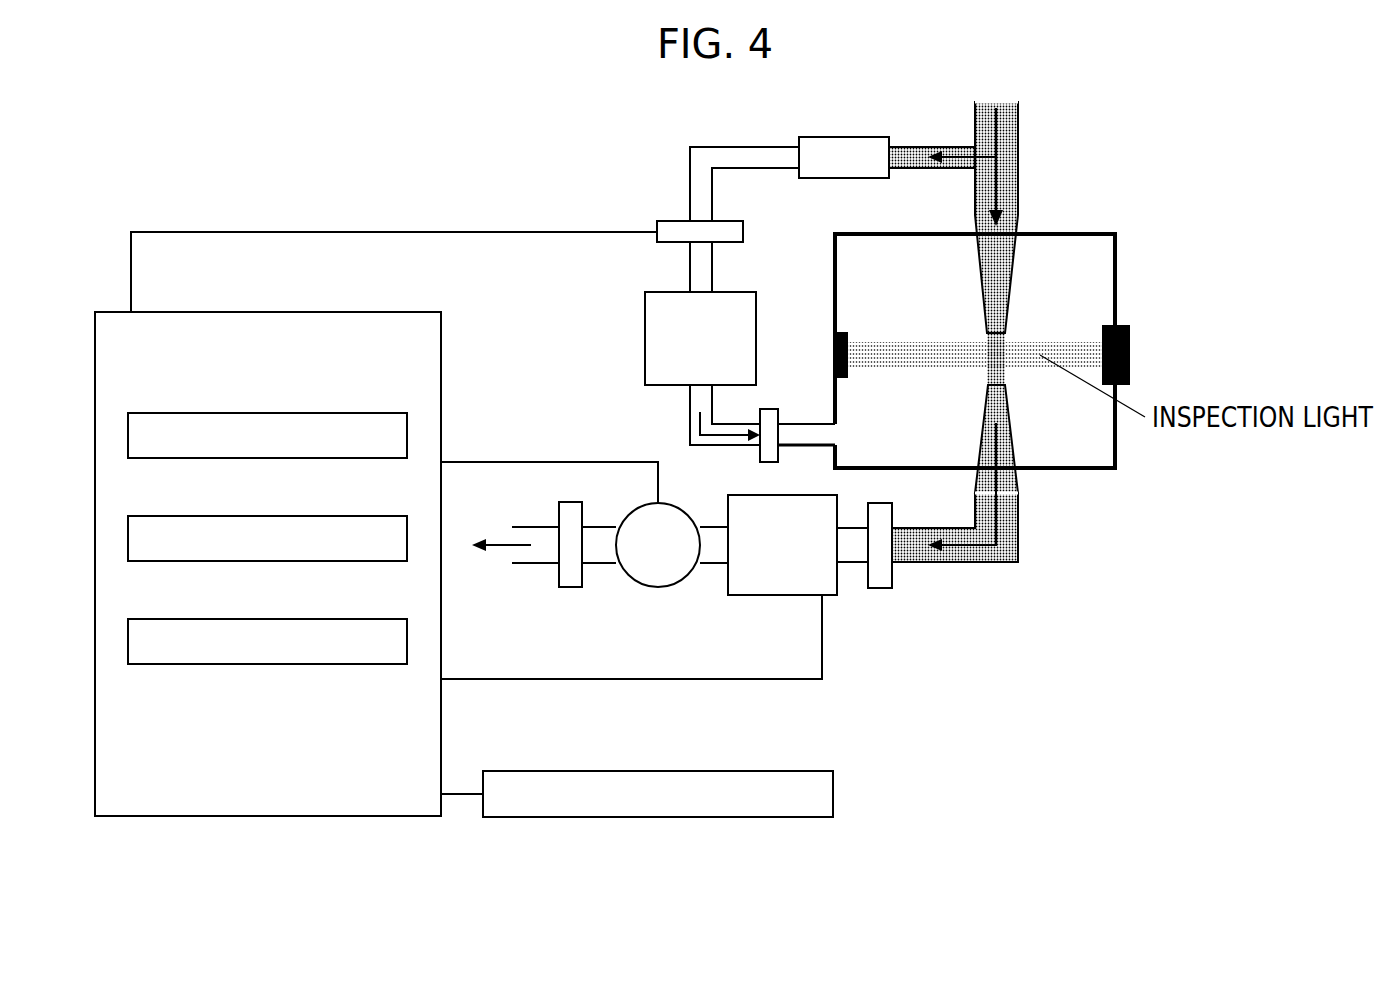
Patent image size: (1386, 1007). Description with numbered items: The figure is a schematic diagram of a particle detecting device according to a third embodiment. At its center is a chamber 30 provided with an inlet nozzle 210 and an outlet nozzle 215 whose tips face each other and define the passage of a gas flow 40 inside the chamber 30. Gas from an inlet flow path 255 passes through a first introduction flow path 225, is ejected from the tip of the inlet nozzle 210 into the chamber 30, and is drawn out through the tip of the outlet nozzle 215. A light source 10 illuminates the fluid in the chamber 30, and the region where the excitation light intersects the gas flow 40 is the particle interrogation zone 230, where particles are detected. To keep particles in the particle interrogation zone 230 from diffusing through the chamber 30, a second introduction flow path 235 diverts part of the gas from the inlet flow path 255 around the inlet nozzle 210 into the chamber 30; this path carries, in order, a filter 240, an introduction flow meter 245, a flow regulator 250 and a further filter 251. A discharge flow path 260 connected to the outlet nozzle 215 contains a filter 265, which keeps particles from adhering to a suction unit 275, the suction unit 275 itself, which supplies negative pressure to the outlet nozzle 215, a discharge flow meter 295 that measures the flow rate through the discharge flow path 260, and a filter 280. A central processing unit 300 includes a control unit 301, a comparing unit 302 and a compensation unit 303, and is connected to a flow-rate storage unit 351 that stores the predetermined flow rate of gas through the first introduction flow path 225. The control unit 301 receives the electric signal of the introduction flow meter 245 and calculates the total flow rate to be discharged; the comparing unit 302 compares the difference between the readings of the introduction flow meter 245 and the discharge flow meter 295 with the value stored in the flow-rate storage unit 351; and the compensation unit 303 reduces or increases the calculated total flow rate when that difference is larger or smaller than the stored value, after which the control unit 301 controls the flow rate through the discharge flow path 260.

The light source 10 is at (835, 345).
The chamber 30 is at (1103, 250).
The gas flow 40 is at (988, 342).
The inlet nozzle 210 is at (1024, 314).
The outlet nozzle 215 is at (1014, 439).
The first introduction flow path 225 is at (1020, 258).
The particle interrogation zone 230 is at (1003, 362).
The second introduction flow path 235 is at (715, 296).
The filter 240 is at (897, 139).
The introduction flow meter 245 is at (675, 246).
The flow regulator 250 is at (670, 348).
The filter 251 is at (773, 408).
The inlet flow path 255 is at (1018, 122).
The discharge flow path 260 is at (981, 513).
The filter 265 is at (869, 576).
The suction unit 275 is at (655, 571).
The filter 280 is at (532, 570).
The discharge flow meter 295 is at (782, 567).
The central processing unit 300 is at (372, 311).
The control unit 301 is at (322, 413).
The comparing unit 302 is at (322, 516).
The compensation unit 303 is at (322, 619).
The flow-rate storage unit 351 is at (768, 771).